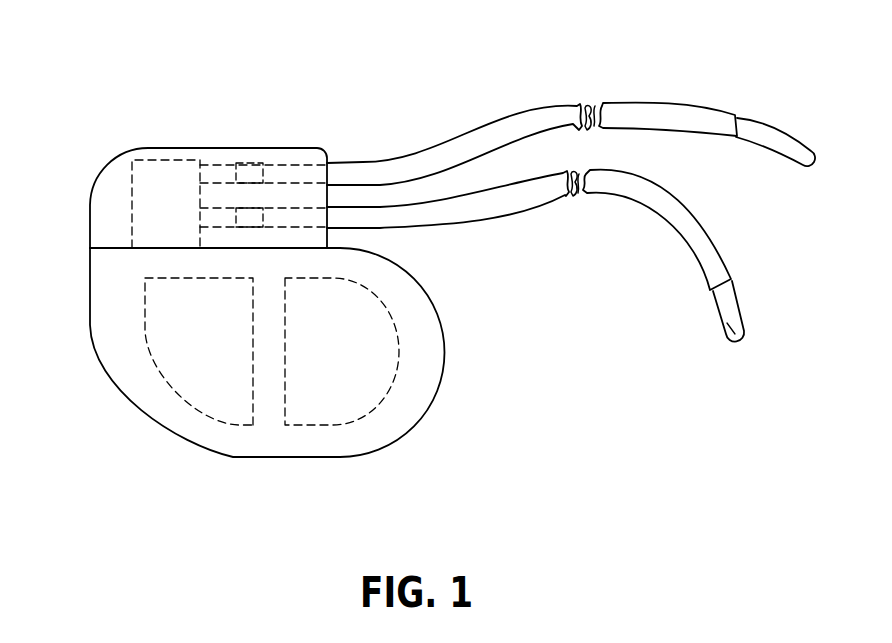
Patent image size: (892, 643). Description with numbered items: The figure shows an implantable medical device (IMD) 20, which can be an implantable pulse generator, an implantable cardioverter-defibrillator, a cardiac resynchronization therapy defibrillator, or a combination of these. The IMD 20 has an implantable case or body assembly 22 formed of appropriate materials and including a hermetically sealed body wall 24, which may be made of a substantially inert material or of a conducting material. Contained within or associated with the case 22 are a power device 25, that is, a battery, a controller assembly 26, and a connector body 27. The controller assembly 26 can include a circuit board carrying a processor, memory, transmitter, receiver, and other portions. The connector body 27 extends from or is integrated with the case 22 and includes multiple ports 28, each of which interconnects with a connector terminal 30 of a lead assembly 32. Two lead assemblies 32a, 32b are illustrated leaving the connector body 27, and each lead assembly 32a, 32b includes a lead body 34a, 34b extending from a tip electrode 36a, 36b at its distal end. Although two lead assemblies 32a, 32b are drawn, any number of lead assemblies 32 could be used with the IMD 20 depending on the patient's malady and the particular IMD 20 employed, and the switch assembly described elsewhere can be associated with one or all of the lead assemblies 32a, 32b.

The implantable medical device 20 is at (177, 107).
The implantable case or body assembly 22 is at (440, 303).
The hermetically sealed body wall 24 is at (435, 358).
The power device 25 is at (227, 388).
The controller assembly 26 is at (335, 405).
The connector body 27 is at (103, 235).
The ports 28 is at (283, 167).
The connector terminal 30 is at (243, 175).
The lead assembly 32 is at (463, 145).
The first lead assembly 32a is at (530, 117).
The second lead assembly 32b is at (522, 195).
The first lead body 34a is at (680, 118).
The second lead body 34b is at (632, 183).
The first tip electrode 36a is at (790, 148).
The second tip electrode 36b is at (739, 345).